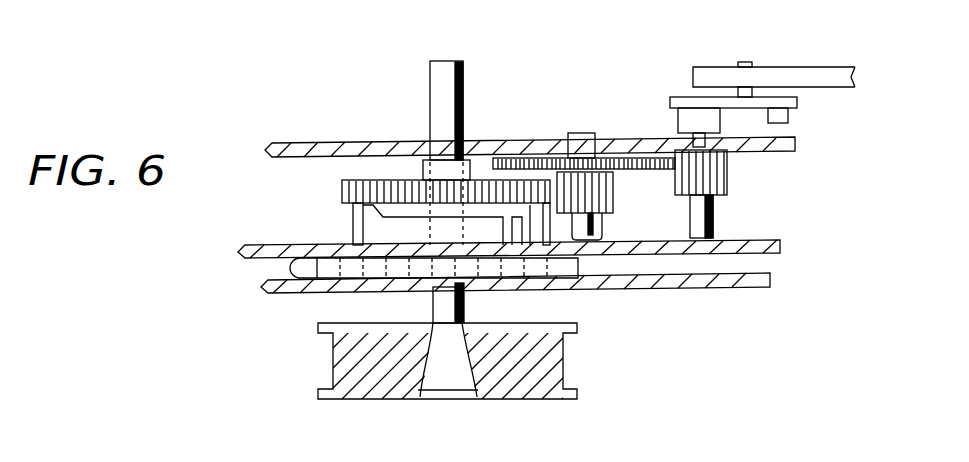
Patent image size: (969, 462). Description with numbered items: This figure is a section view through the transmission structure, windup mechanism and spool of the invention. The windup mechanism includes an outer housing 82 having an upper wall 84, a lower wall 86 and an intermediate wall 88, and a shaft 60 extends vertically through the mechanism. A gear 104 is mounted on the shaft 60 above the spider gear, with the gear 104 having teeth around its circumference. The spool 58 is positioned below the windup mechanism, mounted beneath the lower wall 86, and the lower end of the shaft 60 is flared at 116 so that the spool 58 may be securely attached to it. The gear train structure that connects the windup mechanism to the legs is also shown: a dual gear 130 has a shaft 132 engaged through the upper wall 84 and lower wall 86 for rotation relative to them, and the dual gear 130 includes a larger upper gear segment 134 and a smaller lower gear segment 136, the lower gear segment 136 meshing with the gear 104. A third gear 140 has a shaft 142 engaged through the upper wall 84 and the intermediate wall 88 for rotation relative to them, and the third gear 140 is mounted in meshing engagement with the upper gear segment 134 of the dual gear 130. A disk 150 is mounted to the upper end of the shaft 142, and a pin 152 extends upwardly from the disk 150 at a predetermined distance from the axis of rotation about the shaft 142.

The spool 58 is at (577, 389).
The shaft 60 is at (465, 77).
The outer housing 82 is at (530, 120).
The upper wall 84 is at (280, 146).
The lower wall 86 is at (300, 293).
The intermediate wall 88 is at (242, 254).
The gear 104 is at (341, 191).
The flared lower end of shaft 116 is at (452, 345).
The dual gear 130 is at (479, 152).
The shaft of dual gear 132 is at (578, 133).
The upper gear segment 134 is at (641, 173).
The lower gear segment 136 is at (603, 217).
The third gear 140 is at (728, 173).
The shaft of third gear 142 is at (713, 210).
The disk 150 is at (680, 99).
The pin 152 is at (743, 62).